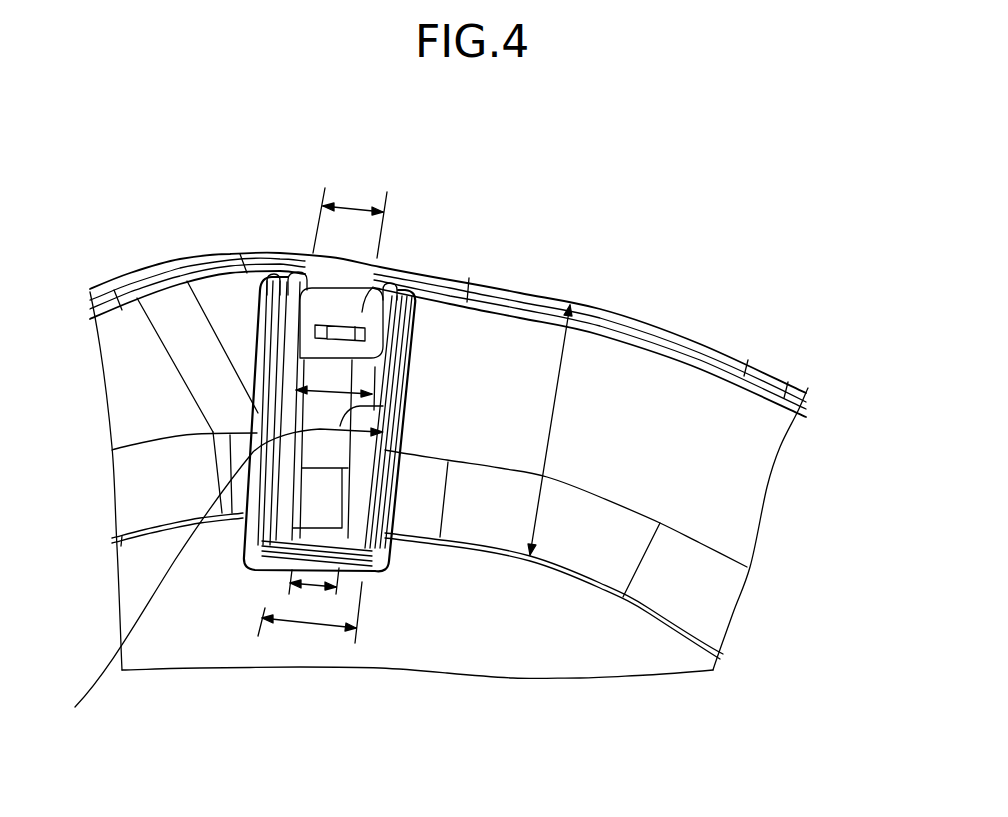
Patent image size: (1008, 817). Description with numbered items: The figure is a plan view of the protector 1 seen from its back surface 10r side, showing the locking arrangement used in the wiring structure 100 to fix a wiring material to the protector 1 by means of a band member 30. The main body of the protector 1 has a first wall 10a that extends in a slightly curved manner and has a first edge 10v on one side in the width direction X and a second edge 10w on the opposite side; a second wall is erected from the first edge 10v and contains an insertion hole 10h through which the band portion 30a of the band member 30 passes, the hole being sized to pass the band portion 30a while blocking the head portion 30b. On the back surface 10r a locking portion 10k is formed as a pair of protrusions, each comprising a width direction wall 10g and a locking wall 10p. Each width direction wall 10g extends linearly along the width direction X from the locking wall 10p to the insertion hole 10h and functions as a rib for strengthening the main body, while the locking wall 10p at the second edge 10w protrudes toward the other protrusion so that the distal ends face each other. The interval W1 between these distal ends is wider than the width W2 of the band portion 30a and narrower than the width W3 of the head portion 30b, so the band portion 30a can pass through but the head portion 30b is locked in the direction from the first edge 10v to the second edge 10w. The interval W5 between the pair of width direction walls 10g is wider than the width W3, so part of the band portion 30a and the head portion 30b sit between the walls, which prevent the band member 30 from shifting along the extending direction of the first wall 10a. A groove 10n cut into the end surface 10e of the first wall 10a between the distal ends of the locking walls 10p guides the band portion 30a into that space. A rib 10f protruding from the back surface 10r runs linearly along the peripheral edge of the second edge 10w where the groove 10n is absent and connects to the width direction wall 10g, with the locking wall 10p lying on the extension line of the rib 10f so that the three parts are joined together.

The protector 1 is at (680, 217).
The wiring structure 100 is at (828, 214).
The end surface 10e is at (172, 252).
The rib 10f is at (714, 355).
The locking portion 10k is at (277, 443).
The locking wall 10p is at (300, 266).
The width direction wall 10g is at (273, 390).
The groove 10n is at (322, 278).
The insertion hole 10h is at (272, 532).
The back surface 10r is at (613, 393).
The first wall 10a is at (417, 545).
The second edge 10w is at (740, 407).
The first edge 10v is at (650, 587).
The band member 30 is at (593, 195).
The band portion 30a is at (548, 292).
The head portion 30b is at (462, 277).
The interval between distal ends of locking walls W1 is at (357, 207).
The width of band portion W2 is at (318, 628).
The width of head portion W3 is at (374, 367).
The interval of width direction walls W5 is at (312, 590).
The width direction X is at (550, 430).